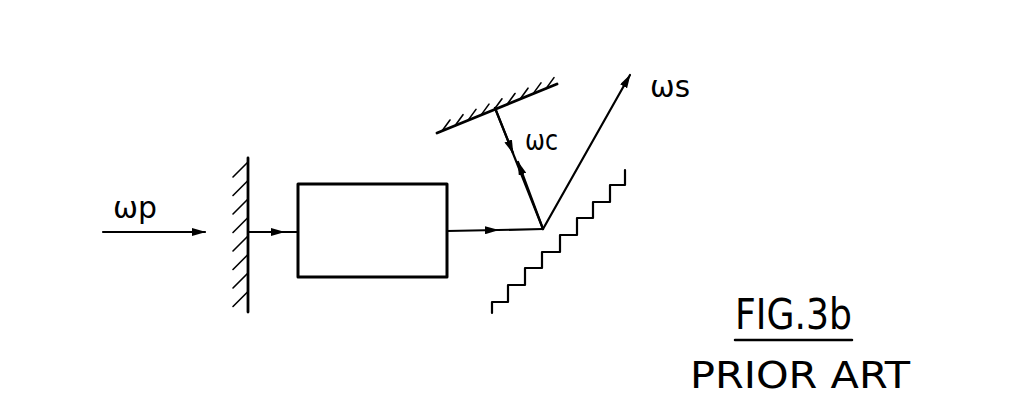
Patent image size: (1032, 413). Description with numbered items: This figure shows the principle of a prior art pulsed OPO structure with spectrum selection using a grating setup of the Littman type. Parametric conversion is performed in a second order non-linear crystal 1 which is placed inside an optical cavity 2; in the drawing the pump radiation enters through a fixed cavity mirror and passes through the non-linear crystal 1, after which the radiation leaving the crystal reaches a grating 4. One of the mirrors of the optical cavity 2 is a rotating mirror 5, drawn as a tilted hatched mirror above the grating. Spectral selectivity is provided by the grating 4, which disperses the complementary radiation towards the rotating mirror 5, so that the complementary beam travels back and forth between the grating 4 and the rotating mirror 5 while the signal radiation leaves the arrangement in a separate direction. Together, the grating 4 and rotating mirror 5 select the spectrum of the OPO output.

The second order non-linear crystal 1 is at (350, 184).
The optical cavity 2 is at (277, 174).
The grating 4 is at (608, 231).
The rotating mirror 5 is at (521, 90).